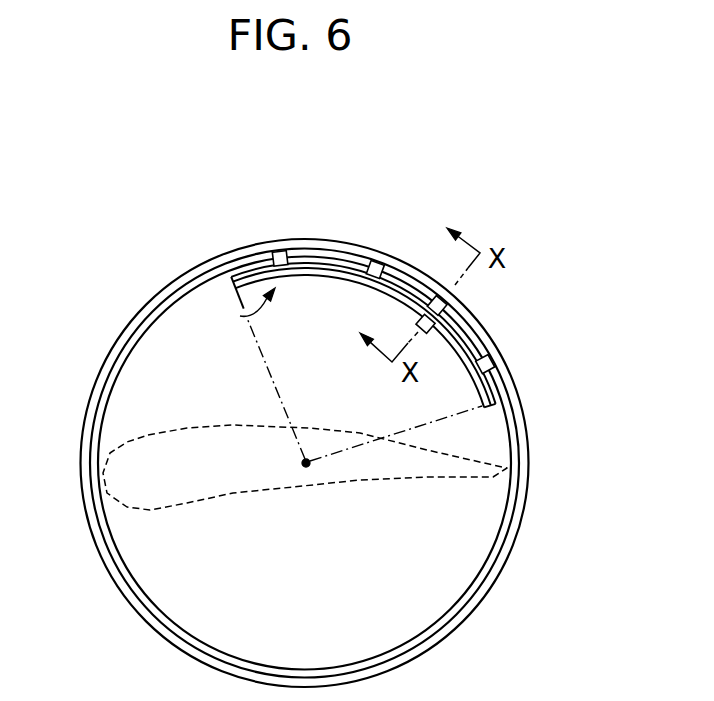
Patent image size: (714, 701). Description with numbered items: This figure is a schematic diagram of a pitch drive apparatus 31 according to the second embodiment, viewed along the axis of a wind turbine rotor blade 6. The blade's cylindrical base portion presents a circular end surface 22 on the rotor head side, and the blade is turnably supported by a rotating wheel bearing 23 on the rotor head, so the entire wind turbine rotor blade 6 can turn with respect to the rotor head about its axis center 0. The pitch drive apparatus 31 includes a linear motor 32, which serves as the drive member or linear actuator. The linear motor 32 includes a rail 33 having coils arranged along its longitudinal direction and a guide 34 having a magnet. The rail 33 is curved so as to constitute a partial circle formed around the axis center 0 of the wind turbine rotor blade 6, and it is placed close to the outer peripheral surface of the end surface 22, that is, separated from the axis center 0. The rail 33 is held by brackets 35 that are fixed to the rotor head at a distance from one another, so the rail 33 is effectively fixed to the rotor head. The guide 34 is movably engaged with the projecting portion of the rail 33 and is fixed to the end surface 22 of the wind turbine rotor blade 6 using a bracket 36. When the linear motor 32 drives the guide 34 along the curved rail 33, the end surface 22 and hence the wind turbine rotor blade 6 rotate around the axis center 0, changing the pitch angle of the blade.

The axis center 0 is at (303, 463).
The wind turbine rotor blade 6 is at (147, 432).
The end surface 22 is at (168, 567).
The rotating wheel bearing 23 is at (523, 440).
The pitch drive apparatus 31 is at (252, 345).
The linear motor 32 is at (245, 316).
The rail 33 is at (325, 268).
The guide 34 is at (477, 322).
The bracket 35 is at (373, 266).
The bracket 36 is at (420, 325).